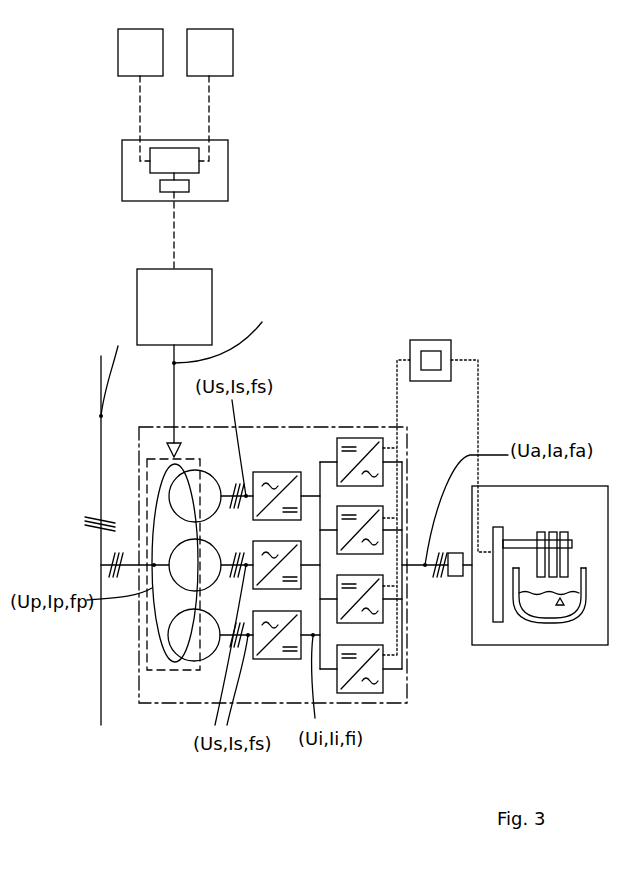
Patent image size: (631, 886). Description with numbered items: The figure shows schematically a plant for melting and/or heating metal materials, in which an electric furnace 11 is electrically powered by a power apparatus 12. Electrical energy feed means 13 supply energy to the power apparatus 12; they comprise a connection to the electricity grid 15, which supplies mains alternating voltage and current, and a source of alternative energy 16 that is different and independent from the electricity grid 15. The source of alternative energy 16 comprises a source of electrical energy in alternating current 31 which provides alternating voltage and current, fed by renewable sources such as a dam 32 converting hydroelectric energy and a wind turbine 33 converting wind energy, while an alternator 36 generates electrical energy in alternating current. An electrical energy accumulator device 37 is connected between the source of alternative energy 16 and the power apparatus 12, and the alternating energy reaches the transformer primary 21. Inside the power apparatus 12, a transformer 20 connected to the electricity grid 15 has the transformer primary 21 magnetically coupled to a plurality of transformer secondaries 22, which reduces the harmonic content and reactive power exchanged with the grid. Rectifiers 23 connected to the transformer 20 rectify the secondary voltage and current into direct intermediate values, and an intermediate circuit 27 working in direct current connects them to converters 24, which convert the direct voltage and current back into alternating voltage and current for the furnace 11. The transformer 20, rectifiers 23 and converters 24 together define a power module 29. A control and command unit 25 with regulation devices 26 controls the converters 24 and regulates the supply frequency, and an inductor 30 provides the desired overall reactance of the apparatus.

The electric furnace 11 is at (540, 645).
The power apparatus 12 is at (342, 428).
The electrical energy feed means 13 is at (99, 203).
The electricity grid 15 is at (101, 479).
The source of alternative energy 16 is at (228, 141).
The transformer 20 is at (159, 672).
The transformer primary 21 is at (157, 641).
The transformer secondaries 22 is at (213, 477).
The rectifiers 23 is at (285, 482).
The converters 24 is at (370, 445).
The control and command unit 25 is at (440, 339).
The regulation devices 26 is at (428, 358).
The intermediate circuit 27 is at (326, 462).
The power module 29 is at (397, 704).
The inductor 30 is at (455, 565).
The source of electrical energy in alternating current 31 is at (174, 160).
The dam 32 is at (152, 63).
The wind turbine 33 is at (222, 63).
The alternator 36 is at (179, 189).
The electrical energy accumulator device 37 is at (186, 317).